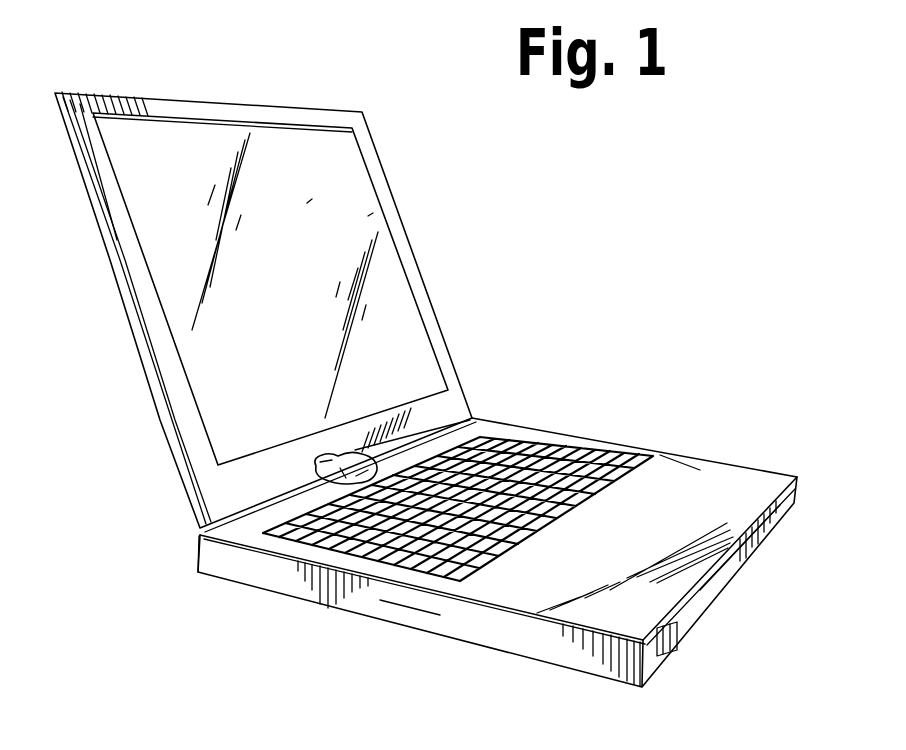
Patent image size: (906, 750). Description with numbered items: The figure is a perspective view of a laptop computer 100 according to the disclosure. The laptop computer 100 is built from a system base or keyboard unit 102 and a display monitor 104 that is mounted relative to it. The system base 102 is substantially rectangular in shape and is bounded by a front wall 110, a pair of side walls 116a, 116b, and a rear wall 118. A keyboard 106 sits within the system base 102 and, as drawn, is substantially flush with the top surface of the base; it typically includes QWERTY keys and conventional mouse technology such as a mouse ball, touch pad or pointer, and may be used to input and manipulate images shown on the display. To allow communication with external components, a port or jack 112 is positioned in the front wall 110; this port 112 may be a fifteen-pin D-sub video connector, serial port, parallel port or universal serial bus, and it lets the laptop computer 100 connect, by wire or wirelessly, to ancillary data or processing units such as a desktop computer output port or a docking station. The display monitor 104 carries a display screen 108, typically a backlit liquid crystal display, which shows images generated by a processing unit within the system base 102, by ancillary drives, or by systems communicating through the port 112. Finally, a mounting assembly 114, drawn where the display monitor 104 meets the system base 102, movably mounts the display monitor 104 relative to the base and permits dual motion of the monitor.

The laptop computer 100 is at (613, 275).
The system base 102 is at (683, 477).
The display monitor 104 is at (407, 262).
The keyboard 106 is at (557, 432).
The display screen 108 is at (345, 213).
The front wall 110 is at (775, 518).
The port 112 is at (675, 647).
The mounting assembly 114 is at (337, 458).
The side wall 116a is at (657, 448).
The side wall 116b is at (460, 623).
The rear wall 118 is at (197, 552).